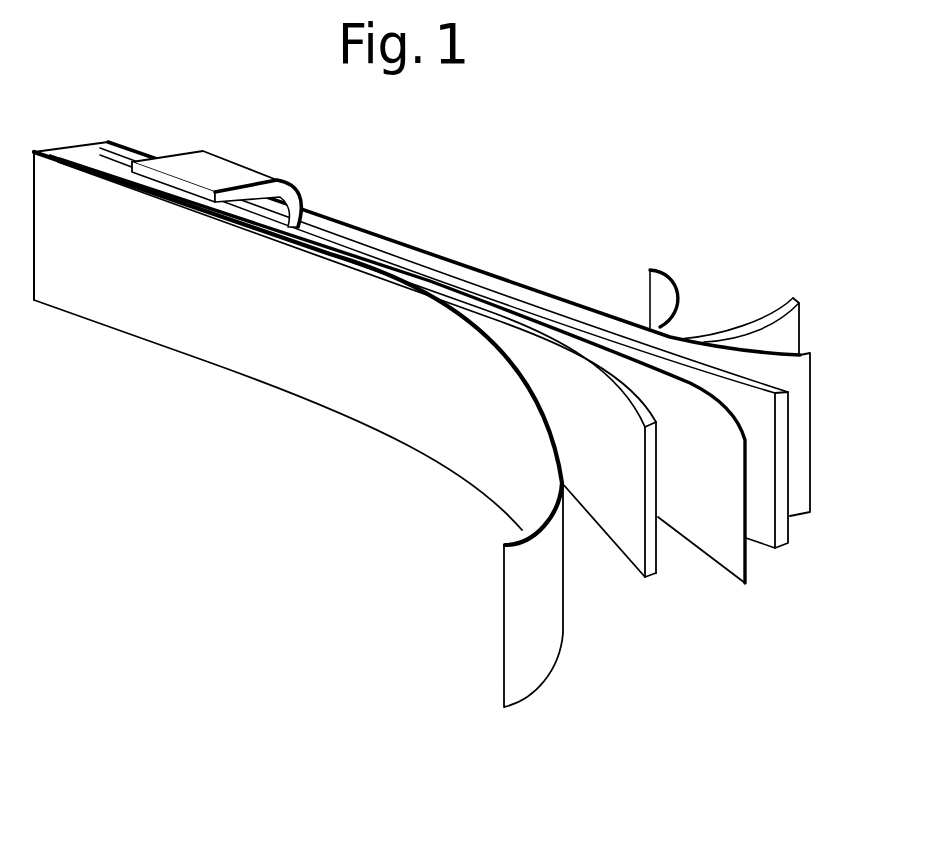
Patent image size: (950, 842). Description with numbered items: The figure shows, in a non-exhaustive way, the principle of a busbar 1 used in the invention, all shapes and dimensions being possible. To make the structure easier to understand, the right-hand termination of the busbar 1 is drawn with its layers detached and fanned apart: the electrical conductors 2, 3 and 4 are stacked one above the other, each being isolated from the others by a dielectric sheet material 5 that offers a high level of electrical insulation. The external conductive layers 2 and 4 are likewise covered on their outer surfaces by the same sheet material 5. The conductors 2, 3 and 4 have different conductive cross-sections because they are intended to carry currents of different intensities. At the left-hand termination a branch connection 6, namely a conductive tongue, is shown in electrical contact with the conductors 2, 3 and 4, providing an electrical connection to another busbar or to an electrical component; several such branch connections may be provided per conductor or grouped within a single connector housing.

The busbar 1 is at (258, 394).
The conductor 2 is at (567, 372).
The conductor 3 is at (763, 458).
The conductor 4 is at (786, 330).
The dielectric sheet material 5 is at (674, 323).
The branch connection 6 is at (235, 173).